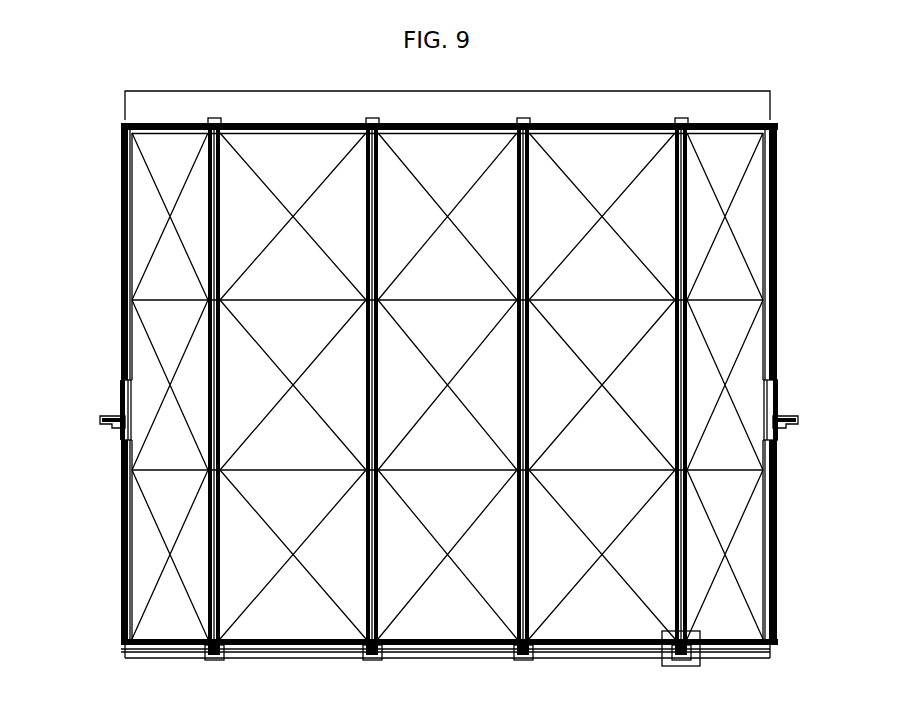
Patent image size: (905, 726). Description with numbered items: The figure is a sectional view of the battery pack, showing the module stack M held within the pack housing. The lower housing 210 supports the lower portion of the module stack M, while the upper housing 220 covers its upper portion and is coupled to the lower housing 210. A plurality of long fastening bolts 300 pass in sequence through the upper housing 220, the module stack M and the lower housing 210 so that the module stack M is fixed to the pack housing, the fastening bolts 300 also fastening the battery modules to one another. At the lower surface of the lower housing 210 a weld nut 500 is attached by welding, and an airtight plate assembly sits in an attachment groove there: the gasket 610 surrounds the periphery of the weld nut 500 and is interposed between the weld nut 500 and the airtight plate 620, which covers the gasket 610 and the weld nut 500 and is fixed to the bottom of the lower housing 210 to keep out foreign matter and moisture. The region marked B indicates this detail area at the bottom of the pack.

The lower housing 210 is at (121, 510).
The upper housing 220 is at (121, 163).
The fastening bolt 300 is at (214, 232).
The weld nut 500 is at (204, 660).
The gasket 610 is at (274, 652).
The airtight plate 620 is at (346, 655).
The module stack M is at (727, 252).
The detail region B is at (682, 666).